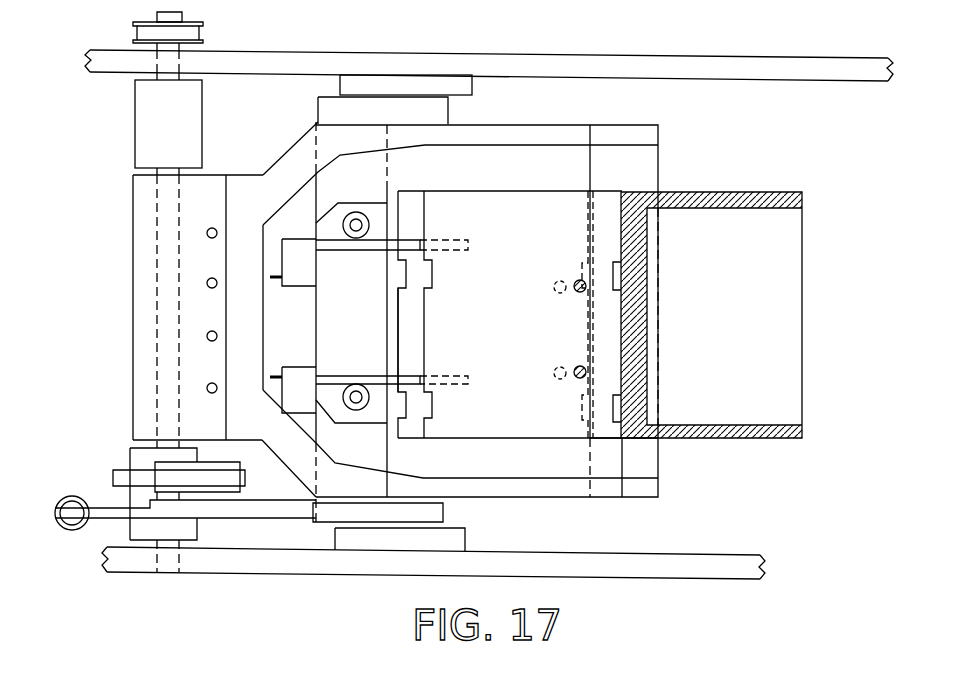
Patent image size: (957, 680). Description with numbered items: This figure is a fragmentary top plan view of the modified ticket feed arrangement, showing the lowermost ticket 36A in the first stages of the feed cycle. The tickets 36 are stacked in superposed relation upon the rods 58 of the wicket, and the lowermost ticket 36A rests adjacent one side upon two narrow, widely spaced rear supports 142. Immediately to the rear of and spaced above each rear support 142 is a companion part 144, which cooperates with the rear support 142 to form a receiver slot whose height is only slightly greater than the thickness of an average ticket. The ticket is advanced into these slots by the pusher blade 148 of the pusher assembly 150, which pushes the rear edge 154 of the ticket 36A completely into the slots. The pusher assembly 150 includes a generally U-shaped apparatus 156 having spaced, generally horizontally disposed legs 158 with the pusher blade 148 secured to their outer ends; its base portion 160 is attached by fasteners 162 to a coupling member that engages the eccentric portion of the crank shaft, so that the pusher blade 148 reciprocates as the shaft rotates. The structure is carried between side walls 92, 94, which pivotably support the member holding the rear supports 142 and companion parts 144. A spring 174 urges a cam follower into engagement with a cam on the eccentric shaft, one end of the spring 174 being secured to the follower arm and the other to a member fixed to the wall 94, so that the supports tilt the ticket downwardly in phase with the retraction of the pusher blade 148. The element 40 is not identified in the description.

The side wall 92 is at (370, 58).
The side wall 94 is at (617, 567).
The U-shaped apparatus 156 is at (288, 164).
The legs 158 is at (546, 134).
The base portion 160 is at (260, 318).
The fasteners 162 is at (218, 338).
The pusher assembly 150 is at (289, 333).
The companion part 144 is at (319, 376).
The rear support 142 is at (466, 233).
The rear edge 154 is at (398, 323).
The tickets 36 is at (516, 335).
The lowermost ticket 36A is at (406, 338).
The rods 58 is at (576, 283).
The channel member 40 is at (737, 205).
The pusher blade 148 is at (633, 468).
The spring 174 is at (85, 528).